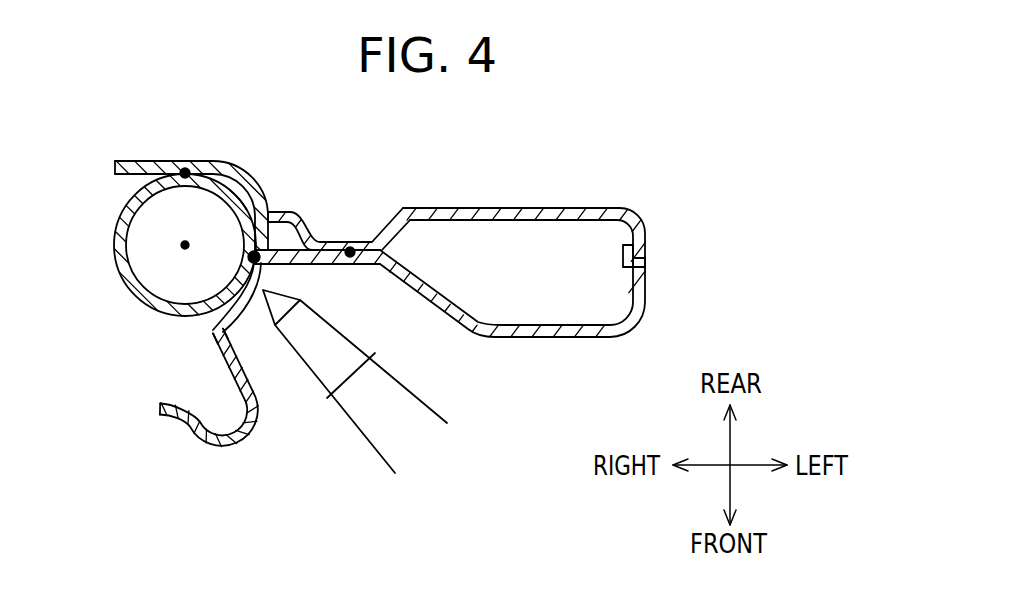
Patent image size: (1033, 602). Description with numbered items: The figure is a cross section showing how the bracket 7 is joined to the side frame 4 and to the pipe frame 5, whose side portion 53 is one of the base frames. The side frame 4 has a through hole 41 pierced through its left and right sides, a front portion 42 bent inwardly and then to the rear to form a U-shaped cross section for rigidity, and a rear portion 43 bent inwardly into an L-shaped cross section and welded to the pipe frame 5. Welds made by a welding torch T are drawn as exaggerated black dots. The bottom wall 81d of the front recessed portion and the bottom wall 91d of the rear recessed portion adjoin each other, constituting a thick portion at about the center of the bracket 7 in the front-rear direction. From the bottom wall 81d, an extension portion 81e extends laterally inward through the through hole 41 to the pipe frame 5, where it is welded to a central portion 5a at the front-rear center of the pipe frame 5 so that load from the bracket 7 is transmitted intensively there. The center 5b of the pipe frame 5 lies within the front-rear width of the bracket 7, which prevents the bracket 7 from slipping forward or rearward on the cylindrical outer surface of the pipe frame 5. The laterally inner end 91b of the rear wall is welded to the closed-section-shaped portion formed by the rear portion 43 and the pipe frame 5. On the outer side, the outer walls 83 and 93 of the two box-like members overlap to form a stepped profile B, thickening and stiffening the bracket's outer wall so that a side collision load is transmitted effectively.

The side frame 4 is at (193, 431).
The pipe frame 5 is at (120, 283).
The side portion 53 is at (145, 260).
The central portion 5a is at (278, 212).
The center 5b is at (185, 245).
The bracket 7 is at (475, 259).
The through hole 41 is at (213, 330).
The front portion 42 is at (202, 433).
The rear portion 43 is at (201, 160).
The bottom wall 81d is at (353, 264).
The extension portion 81e is at (258, 290).
The outer wall 83 is at (622, 255).
The laterally inner end 91b is at (273, 212).
The bottom wall 91d is at (352, 250).
The outer wall 93 is at (648, 259).
The stepped profile B is at (646, 268).
The welding torch T is at (392, 470).